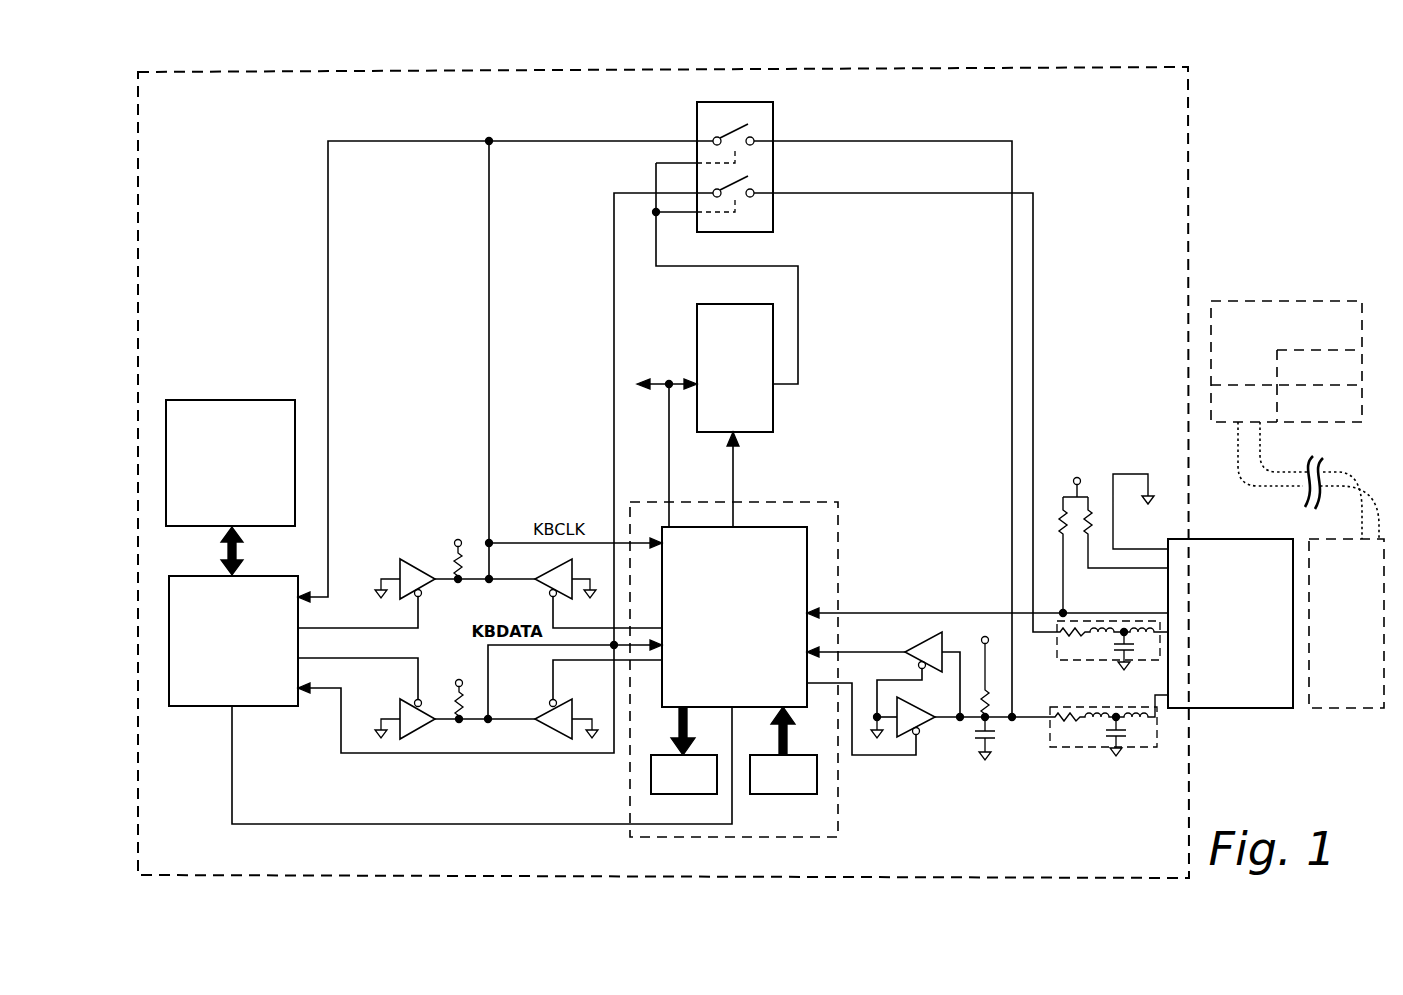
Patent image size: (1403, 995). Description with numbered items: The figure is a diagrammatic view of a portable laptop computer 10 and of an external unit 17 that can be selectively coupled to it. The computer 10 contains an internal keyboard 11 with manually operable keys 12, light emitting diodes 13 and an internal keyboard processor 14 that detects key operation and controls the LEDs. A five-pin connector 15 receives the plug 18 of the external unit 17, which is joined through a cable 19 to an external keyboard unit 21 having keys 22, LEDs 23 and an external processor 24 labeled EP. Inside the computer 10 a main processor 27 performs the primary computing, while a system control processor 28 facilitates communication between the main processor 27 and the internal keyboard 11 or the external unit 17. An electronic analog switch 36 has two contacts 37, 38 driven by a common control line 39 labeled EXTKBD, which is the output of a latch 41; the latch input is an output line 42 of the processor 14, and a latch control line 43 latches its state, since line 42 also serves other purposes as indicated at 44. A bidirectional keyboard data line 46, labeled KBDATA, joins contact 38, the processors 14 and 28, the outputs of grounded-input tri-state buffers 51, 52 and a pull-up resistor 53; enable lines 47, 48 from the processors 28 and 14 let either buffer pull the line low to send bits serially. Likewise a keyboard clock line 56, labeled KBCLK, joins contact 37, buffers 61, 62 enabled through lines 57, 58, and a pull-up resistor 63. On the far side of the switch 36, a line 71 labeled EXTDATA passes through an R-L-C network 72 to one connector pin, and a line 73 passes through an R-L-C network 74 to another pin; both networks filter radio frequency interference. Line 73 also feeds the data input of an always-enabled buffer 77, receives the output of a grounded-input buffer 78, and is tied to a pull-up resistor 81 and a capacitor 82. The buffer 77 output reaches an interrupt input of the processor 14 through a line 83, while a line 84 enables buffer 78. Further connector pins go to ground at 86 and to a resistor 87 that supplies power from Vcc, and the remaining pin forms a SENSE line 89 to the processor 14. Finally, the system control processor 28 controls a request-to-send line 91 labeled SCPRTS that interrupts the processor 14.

The portable computing device 10 is at (1189, 153).
The internal keyboard 11 is at (838, 795).
The keys 12 is at (803, 795).
The light emitting diodes 13 is at (678, 794).
The internal keyboard processor 14 is at (807, 567).
The five-pin connector 15 is at (1221, 540).
The external unit 17 is at (1352, 475).
The plug 18 is at (1352, 710).
The cable 19 is at (1346, 501).
The external keyboard unit 21 is at (1242, 300).
The keys 22 is at (1355, 415).
The LEDs 23 is at (1362, 361).
The external processor 24 is at (1232, 423).
The main processor 27 is at (200, 400).
The system control processor 28 is at (210, 706).
The electronic analog switch 36 is at (697, 106).
The switch contact 37 is at (754, 132).
The switch contact 38 is at (754, 184).
The control line 39 is at (798, 275).
The latch 41 is at (775, 395).
The output line 42 is at (670, 490).
The latch control line 43 is at (735, 490).
The other uses of output line 44 is at (655, 395).
The bidirectional keyboard data line 46 is at (613, 279).
The output line 47 is at (366, 660).
The output line 48 is at (558, 664).
The tri-state buffer 51 is at (398, 712).
The tri-state buffer 52 is at (546, 708).
The resistor 53 is at (456, 694).
The bidirectional keyboard clock line 56 is at (488, 362).
The enable line 57 is at (403, 631).
The enable line 58 is at (603, 626).
The tri-state buffer 61 is at (398, 568).
The tri-state buffer 62 is at (546, 592).
The resistor 63 is at (448, 557).
The line 71 is at (1012, 377).
The R-L-C network 72 is at (1086, 663).
The line 73 is at (1033, 377).
The R-L-C network 74 is at (1105, 750).
The tri-state buffer 77 is at (941, 634).
The tri-state buffer 78 is at (927, 722).
The pull-up resistor 81 is at (986, 693).
The capacitor 82 is at (1000, 737).
The line 83 is at (897, 650).
The line 84 is at (910, 758).
The ground connection 86 is at (1113, 547).
The resistor 87 is at (1090, 517).
The line 89 is at (988, 613).
The request-to-send line 91 is at (502, 822).